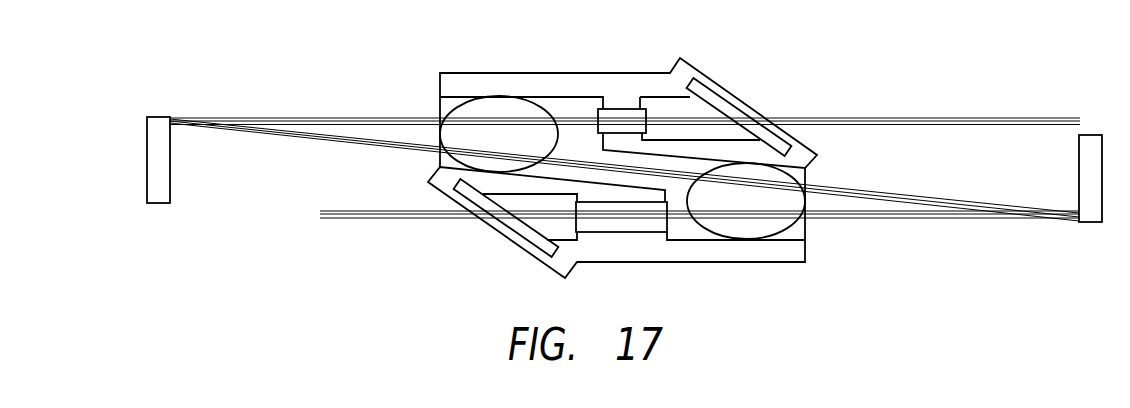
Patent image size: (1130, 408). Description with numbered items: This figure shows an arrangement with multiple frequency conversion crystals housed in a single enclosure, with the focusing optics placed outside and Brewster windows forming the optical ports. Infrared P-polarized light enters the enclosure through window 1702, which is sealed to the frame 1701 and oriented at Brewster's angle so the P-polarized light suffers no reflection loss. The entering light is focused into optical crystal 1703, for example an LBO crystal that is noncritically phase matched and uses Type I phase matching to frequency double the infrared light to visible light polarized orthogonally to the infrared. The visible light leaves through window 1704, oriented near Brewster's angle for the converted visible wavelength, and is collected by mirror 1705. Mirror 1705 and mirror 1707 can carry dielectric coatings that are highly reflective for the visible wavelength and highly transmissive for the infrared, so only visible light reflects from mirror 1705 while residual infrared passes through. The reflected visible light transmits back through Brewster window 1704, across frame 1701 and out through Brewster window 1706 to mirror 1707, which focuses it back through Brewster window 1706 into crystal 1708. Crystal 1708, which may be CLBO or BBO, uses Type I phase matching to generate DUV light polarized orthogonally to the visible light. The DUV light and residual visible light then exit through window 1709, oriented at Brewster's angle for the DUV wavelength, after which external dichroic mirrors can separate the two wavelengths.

The frame 1701 is at (533, 75).
The window 1702 is at (520, 233).
The optical crystal 1703 is at (637, 222).
The window 1704 is at (758, 223).
The mirror 1705 is at (1090, 222).
The Brewster window 1706 is at (472, 103).
The mirror 1707 is at (157, 116).
The crystal 1708 is at (635, 112).
The window 1709 is at (733, 112).